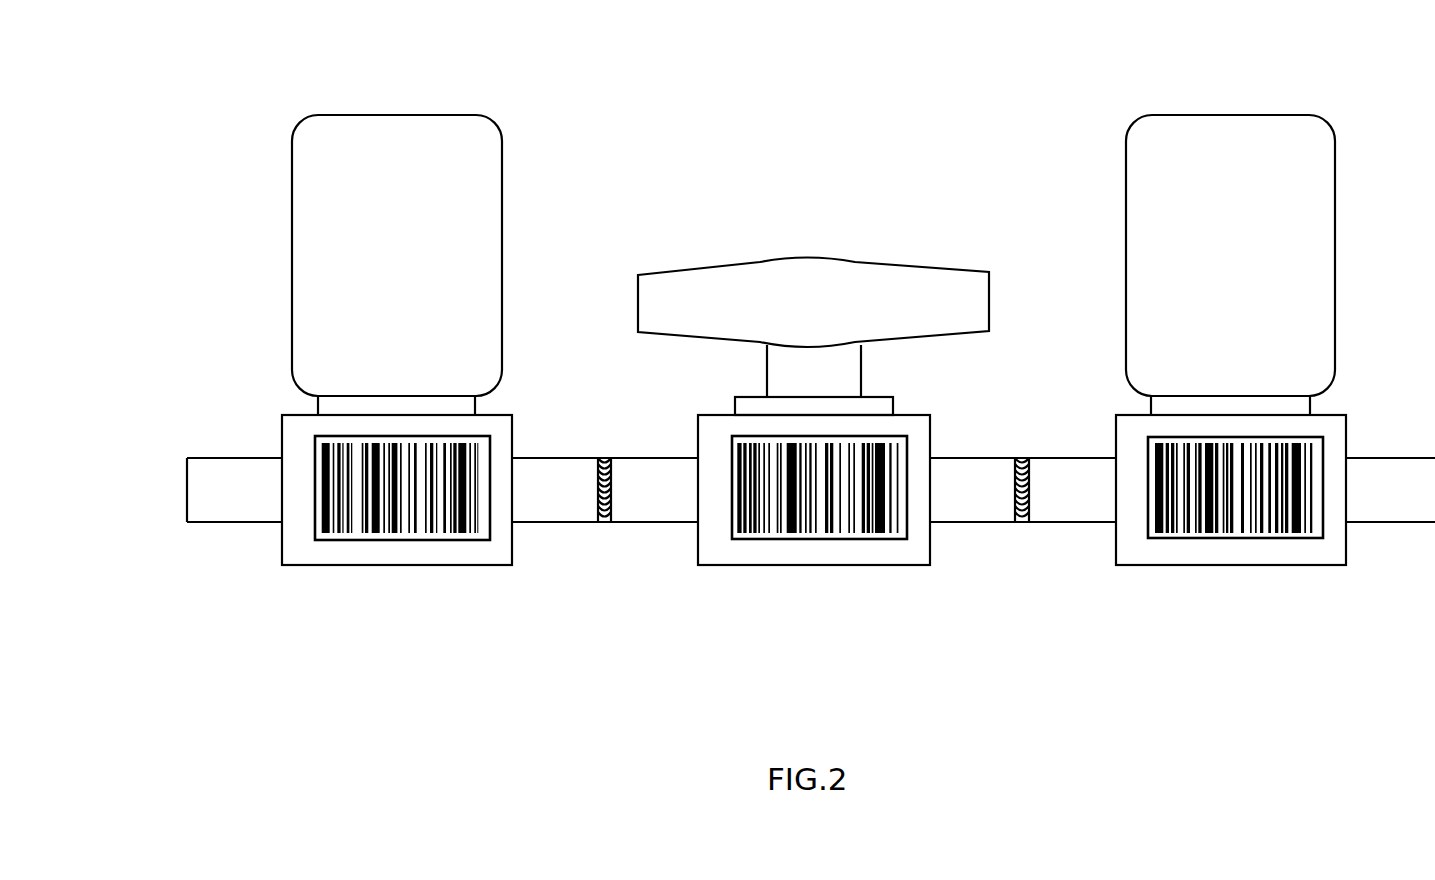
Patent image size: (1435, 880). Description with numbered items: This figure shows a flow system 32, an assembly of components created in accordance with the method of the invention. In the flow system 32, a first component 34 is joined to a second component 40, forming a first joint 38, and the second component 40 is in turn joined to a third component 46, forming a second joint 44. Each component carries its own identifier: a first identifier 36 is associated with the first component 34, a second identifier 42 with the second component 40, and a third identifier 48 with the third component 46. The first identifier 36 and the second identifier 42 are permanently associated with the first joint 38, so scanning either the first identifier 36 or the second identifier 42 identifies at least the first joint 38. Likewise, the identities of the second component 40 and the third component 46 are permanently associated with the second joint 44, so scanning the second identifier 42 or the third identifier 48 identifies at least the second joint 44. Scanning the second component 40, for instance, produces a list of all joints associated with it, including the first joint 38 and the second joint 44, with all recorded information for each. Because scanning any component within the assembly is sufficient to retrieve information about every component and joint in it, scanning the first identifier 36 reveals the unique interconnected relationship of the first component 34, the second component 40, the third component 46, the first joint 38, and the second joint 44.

The flow system 32 is at (227, 108).
The first component 34 is at (418, 153).
The first identifier 36 is at (438, 535).
The first joint 38 is at (607, 522).
The second component 40 is at (783, 288).
The second identifier 42 is at (814, 535).
The second joint 44 is at (1022, 522).
The third component 46 is at (1147, 176).
The third identifier 48 is at (1235, 537).